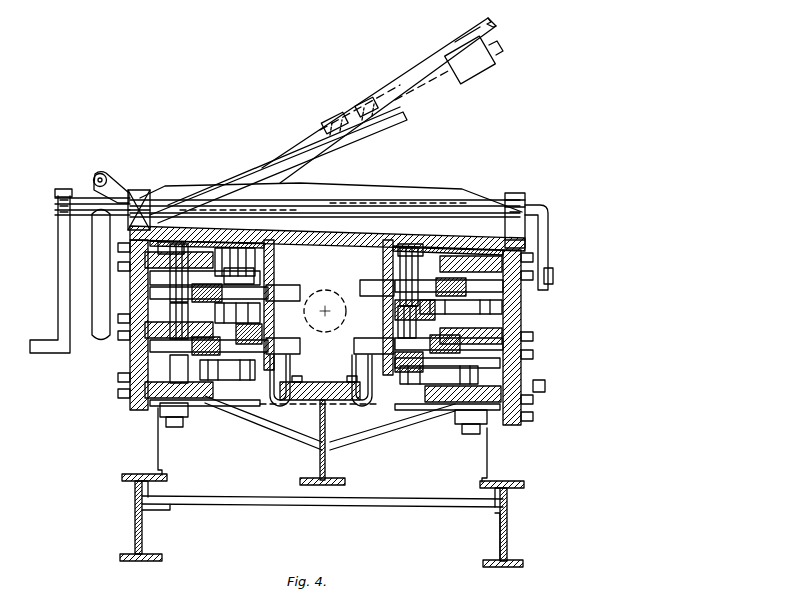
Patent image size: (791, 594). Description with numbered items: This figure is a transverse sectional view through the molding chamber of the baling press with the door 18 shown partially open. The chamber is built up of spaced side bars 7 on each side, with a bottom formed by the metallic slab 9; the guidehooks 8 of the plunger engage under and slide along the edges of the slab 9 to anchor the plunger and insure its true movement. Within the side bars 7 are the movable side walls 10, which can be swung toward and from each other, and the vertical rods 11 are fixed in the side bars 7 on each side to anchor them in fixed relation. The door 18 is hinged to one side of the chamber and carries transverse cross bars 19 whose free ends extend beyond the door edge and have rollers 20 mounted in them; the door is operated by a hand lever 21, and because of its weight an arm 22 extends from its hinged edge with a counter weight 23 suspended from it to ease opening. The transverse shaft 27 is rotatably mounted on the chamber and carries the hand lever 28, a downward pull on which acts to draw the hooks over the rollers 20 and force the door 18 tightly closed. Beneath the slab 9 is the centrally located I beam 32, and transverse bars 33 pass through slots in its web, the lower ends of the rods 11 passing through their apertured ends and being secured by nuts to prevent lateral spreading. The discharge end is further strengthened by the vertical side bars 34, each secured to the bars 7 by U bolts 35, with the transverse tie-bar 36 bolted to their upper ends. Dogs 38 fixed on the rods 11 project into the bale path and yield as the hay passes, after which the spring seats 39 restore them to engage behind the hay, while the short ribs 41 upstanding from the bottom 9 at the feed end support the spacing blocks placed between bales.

The side bars 7 is at (160, 270).
The guidehooks 8 is at (270, 393).
The bottom slab 9 is at (333, 381).
The movable side walls 10 is at (274, 252).
The vertical rods 11 is at (156, 292).
The door 18 is at (345, 142).
The transverse cross bars 19 is at (310, 146).
The rollers 20 is at (480, 72).
The hand lever 21 is at (455, 45).
The arm 22 is at (130, 191).
The counter weight 23 is at (93, 270).
The transverse shaft 27 is at (506, 195).
The hand lever 28 is at (58, 262).
The I beam 32 is at (326, 466).
The transverse bars 33 is at (295, 436).
The vertical side bars 34 is at (130, 360).
The U bolts 35 is at (214, 264).
The transverse tie-bar 36 is at (413, 189).
The dogs 38 is at (300, 292).
The spring seats 39 is at (218, 289).
The short ribs 41 is at (296, 372).